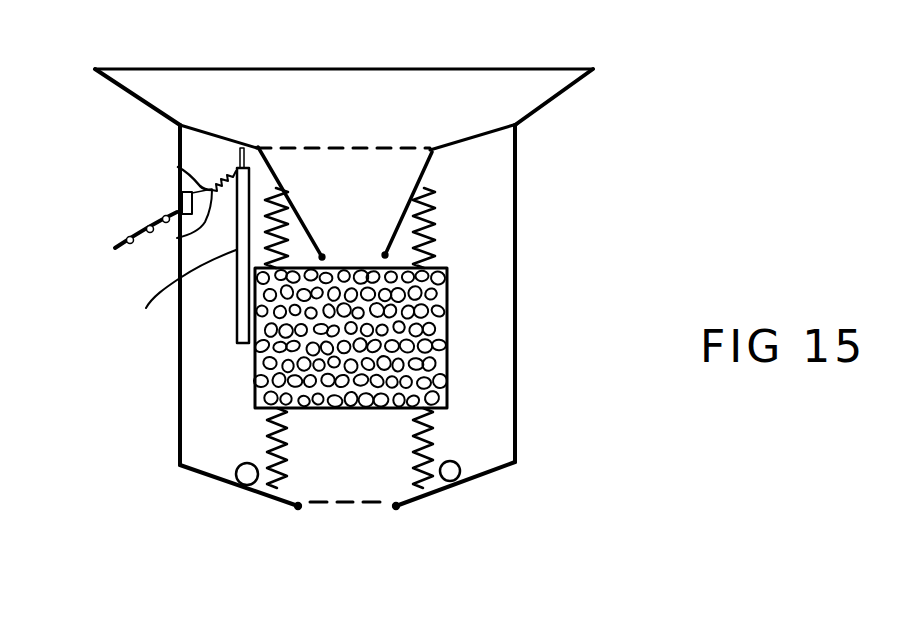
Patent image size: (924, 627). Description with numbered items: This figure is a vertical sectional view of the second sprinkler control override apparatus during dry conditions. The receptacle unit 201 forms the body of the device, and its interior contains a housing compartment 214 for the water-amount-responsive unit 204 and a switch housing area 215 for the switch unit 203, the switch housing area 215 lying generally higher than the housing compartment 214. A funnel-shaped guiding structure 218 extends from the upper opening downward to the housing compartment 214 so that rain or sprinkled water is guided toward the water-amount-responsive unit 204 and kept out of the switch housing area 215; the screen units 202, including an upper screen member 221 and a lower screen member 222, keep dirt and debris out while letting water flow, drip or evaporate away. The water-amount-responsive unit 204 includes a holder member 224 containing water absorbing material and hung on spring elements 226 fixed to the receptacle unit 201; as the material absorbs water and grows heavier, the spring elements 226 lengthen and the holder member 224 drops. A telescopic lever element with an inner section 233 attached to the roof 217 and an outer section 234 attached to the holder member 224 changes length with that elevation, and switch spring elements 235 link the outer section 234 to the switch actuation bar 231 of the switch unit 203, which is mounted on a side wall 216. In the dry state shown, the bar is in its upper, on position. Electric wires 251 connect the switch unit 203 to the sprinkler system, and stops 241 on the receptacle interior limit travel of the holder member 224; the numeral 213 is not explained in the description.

The receptacle unit 201 is at (177, 407).
The screen units 202 is at (352, 147).
The switch unit 203 is at (181, 203).
The water-amount-responsive unit 204 is at (450, 315).
The hopper 213 is at (543, 92).
The housing compartment 214 is at (235, 375).
The switch housing area 215 is at (225, 162).
The side wall 216 is at (177, 355).
The roof 217 is at (473, 138).
The guiding structure 218 is at (273, 185).
The upper screen member 221 is at (403, 147).
The lower screen member 222 is at (313, 503).
The holder member 224 is at (450, 370).
The spring elements 226 is at (428, 237).
The switch actuation bar 231 is at (178, 152).
The inner section 233 is at (253, 148).
The outer section 234 is at (146, 308).
The switch spring elements 235 is at (177, 238).
The stops 241 is at (237, 477).
The electric wires 251 is at (143, 228).